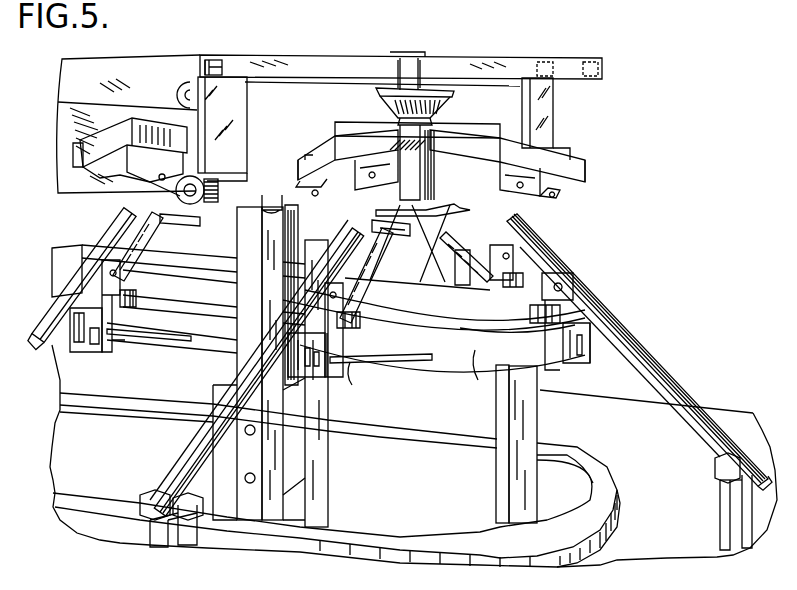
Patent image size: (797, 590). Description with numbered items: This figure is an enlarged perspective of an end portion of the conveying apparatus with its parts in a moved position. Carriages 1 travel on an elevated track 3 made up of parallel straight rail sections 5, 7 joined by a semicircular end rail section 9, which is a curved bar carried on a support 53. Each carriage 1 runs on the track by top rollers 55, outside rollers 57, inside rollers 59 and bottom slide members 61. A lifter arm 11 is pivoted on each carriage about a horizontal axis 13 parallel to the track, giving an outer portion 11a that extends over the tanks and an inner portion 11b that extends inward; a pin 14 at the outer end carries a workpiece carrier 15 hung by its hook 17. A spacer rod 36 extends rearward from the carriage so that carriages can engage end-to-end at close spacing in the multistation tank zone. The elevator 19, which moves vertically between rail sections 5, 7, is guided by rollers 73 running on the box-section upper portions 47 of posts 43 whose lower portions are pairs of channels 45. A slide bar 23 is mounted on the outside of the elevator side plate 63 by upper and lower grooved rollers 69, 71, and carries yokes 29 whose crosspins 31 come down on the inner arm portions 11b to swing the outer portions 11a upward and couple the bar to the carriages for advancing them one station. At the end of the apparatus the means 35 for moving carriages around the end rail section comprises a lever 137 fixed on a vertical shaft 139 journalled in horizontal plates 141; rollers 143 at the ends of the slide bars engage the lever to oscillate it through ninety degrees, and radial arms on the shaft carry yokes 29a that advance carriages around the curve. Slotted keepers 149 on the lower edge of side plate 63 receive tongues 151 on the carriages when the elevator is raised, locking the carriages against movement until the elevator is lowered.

The carriage 1 is at (112, 353).
The elevated track 3 is at (389, 373).
The straight rail section 5 is at (178, 347).
The straight rail section 7 is at (228, 265).
The semicircular end rail section 9 is at (475, 364).
The arm 11 is at (38, 313).
The outer arm portion 11a is at (190, 464).
The inner arm portion 11b is at (117, 226).
The pivot axis 13 is at (117, 273).
The pin 14 is at (148, 497).
The workpiece carrier 15 is at (195, 545).
The hook 17 is at (158, 491).
The elevator 19 is at (51, 119).
The slide bar 23 is at (72, 165).
The yoke 29 is at (112, 132).
The yoke 29a is at (312, 153).
The crosspin 31 is at (138, 198).
The end moving means 35 is at (588, 49).
The spacer rod 36 is at (174, 336).
The post 43 is at (340, 465).
The channel 45 is at (327, 499).
The upper post portion 47 is at (232, 291).
The support 53 is at (494, 497).
The top roller 55 is at (130, 309).
The outside roller 57 is at (78, 353).
The inside roller 59 is at (500, 298).
The bottom slide member 61 is at (114, 353).
The side plate 63 is at (356, 95).
The upper grooved roller 69 is at (178, 95).
The lower grooved roller 71 is at (219, 193).
The guide roller 73 is at (278, 215).
The lever 137 is at (283, 55).
The vertical shaft 139 is at (408, 58).
The horizontal plate 141 is at (450, 96).
The roller 143 is at (203, 57).
The slotted keeper 149 is at (178, 224).
The tongue 151 is at (150, 240).